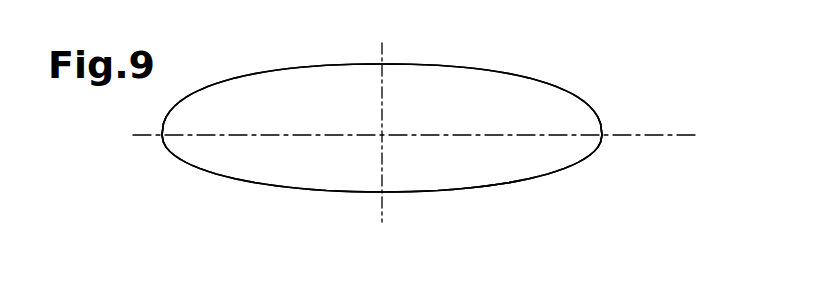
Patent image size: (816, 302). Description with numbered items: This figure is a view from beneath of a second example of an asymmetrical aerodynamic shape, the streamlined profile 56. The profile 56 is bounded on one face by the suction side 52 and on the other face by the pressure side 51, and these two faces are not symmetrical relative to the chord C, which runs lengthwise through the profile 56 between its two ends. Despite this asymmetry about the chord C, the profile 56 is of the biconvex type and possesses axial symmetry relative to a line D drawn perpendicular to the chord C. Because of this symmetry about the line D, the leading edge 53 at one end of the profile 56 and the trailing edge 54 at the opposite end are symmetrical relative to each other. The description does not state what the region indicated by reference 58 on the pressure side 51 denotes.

The lower face of the profile 51 is at (280, 188).
The upper face of the profile 52 is at (277, 71).
The leading edge 53 is at (162, 137).
The trailing edge 54 is at (603, 133).
The profile / blade section 56 is at (513, 77).
The lower surface portion 58 is at (497, 169).
The chord axis C is at (670, 137).
The transverse axis D is at (383, 52).